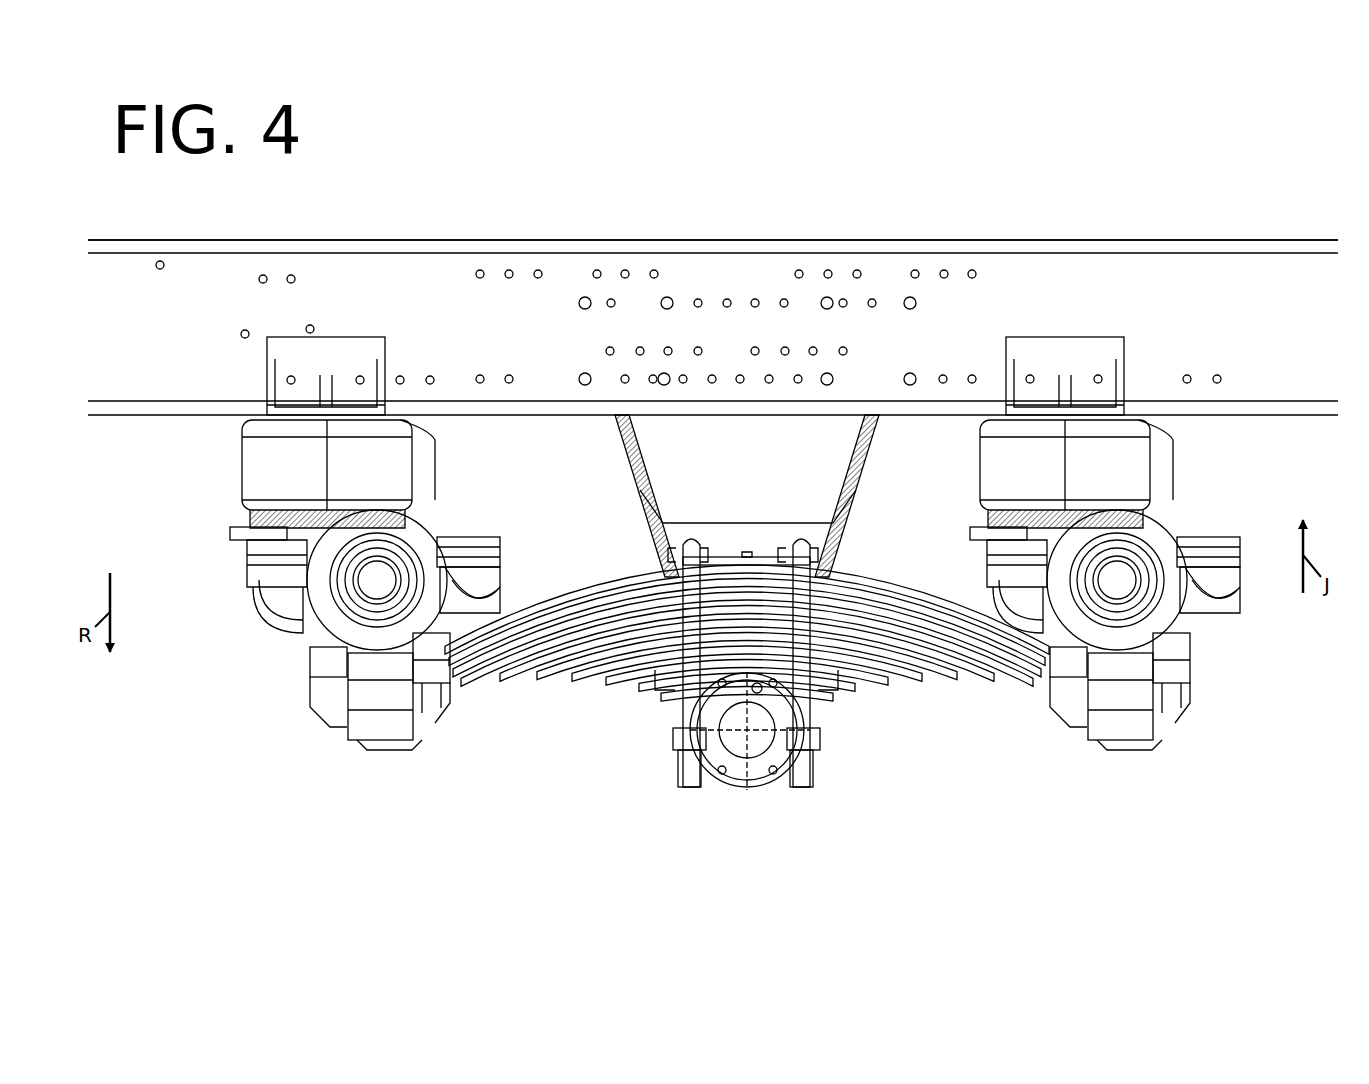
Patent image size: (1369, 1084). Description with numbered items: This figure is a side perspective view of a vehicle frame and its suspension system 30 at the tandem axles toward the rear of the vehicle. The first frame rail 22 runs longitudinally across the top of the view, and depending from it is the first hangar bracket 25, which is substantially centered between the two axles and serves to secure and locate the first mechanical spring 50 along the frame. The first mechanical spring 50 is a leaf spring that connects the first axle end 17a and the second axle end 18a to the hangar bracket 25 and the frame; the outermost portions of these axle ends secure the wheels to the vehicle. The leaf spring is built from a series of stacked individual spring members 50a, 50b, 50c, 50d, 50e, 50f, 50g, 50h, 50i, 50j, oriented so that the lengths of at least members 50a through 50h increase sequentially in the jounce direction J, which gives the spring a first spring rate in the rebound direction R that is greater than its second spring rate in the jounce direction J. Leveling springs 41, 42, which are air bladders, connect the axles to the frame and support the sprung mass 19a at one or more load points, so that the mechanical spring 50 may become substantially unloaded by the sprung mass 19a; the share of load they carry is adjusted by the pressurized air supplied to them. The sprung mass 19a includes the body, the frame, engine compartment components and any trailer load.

The first frame rail 22 is at (972, 305).
The first hangar bracket 25 is at (712, 442).
The suspension system 30 is at (735, 626).
The leveling spring 41 is at (297, 457).
The leveling spring 42 is at (1110, 440).
The first end of first axle 17a is at (377, 580).
The first end of second axle 18a is at (1127, 583).
The sprung mass 19a is at (1252, 358).
The first mechanical spring 50 is at (859, 717).
The individual spring member 50a is at (829, 702).
The individual spring member 50b is at (853, 702).
The individual spring member 50c is at (885, 702).
The individual spring member 50d is at (918, 702).
The individual spring member 50e is at (953, 702).
The individual spring member 50f is at (990, 693).
The individual spring member 50g is at (1033, 688).
The individual spring member 50h is at (1050, 670).
The individual spring member 50i is at (1040, 658).
The individual spring member 50j is at (1048, 645).